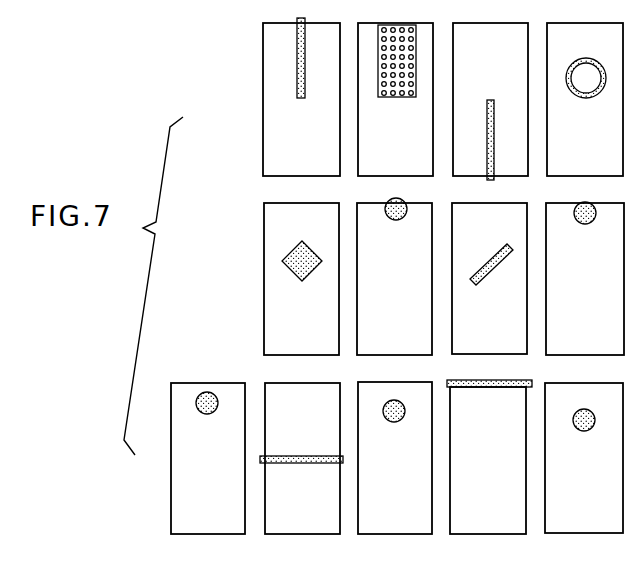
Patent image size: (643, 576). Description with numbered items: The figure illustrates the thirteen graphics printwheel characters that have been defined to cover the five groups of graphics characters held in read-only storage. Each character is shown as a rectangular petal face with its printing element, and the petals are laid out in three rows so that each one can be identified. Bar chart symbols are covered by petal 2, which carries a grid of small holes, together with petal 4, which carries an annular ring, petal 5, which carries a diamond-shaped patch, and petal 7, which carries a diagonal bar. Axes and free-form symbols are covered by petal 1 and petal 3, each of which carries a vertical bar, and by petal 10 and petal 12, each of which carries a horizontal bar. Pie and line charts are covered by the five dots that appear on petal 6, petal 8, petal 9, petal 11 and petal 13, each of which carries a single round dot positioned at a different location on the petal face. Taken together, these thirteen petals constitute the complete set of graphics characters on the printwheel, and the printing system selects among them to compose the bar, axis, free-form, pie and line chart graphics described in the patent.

The petal 1 is at (310, 161).
The petal 2 is at (402, 161).
The petal 3 is at (481, 161).
The petal 4 is at (594, 161).
The petal 5 is at (309, 341).
The petal 6 is at (402, 341).
The petal 7 is at (497, 341).
The petal 8 is at (589, 341).
The petal 9 is at (215, 516).
The petal 10 is at (309, 516).
The petal 11 is at (402, 516).
The petal 12 is at (497, 516).
The petal 13 is at (592, 516).